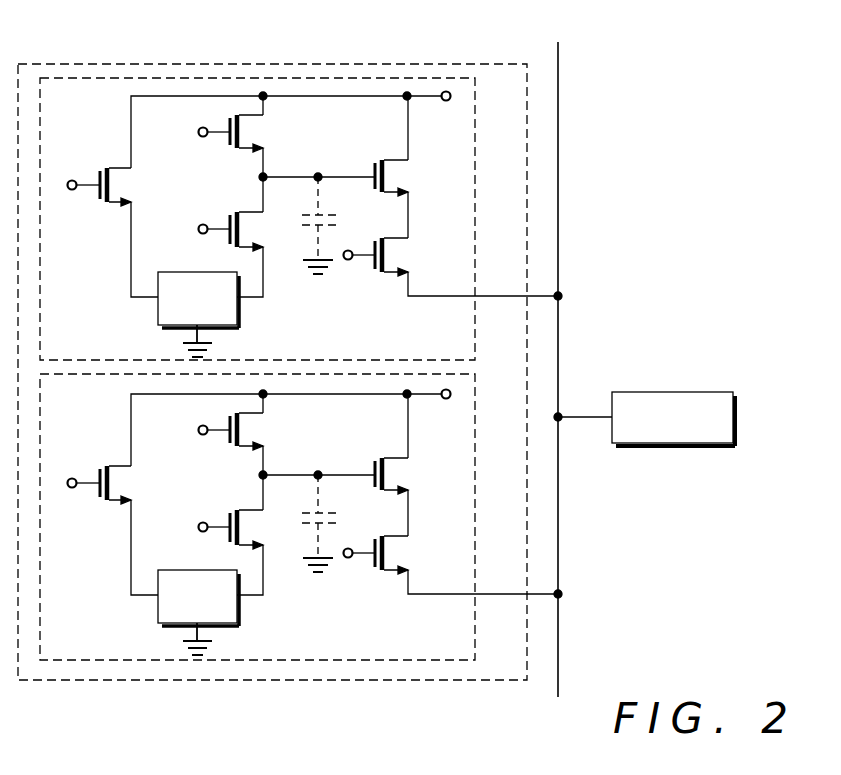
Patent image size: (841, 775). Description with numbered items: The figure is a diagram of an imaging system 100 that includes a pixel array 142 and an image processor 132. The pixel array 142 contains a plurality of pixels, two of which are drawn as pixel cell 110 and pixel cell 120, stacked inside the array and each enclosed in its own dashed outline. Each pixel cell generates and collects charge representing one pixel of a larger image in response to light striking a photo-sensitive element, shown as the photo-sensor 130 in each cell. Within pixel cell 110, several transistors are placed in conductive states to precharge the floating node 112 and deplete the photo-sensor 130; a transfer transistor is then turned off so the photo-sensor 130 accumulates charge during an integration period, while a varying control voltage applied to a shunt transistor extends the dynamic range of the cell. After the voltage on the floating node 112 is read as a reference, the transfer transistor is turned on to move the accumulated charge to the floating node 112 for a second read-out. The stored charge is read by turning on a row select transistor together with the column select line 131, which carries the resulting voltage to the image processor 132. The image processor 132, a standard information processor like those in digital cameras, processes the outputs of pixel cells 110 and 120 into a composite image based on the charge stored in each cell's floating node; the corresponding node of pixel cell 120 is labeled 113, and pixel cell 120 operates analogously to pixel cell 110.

The imaging system 100 is at (636, 268).
The pixel cell 110 is at (473, 150).
The floating node 112 is at (318, 172).
The storage capacitor 113 is at (319, 470).
The pixel cell 120 is at (476, 448).
The photo-sensor 130 is at (192, 272).
The column select line 131 is at (558, 187).
The image processor 132 is at (677, 392).
The pixel array 142 is at (85, 63).